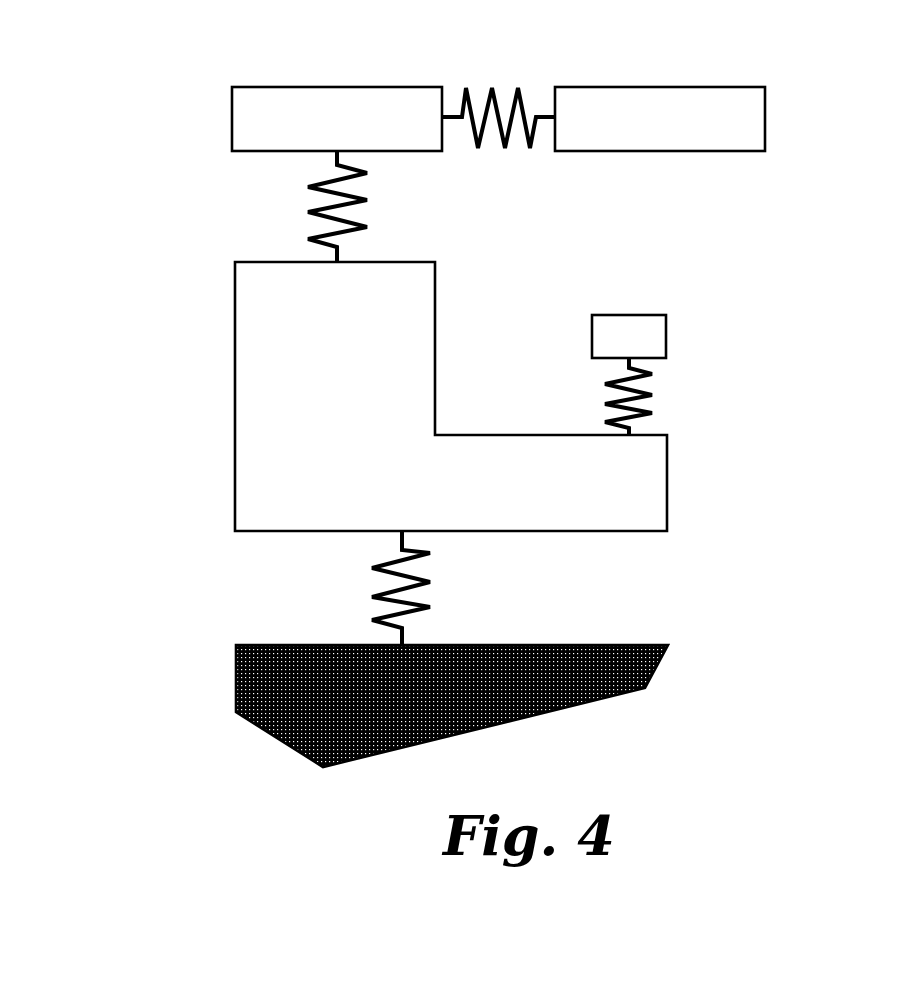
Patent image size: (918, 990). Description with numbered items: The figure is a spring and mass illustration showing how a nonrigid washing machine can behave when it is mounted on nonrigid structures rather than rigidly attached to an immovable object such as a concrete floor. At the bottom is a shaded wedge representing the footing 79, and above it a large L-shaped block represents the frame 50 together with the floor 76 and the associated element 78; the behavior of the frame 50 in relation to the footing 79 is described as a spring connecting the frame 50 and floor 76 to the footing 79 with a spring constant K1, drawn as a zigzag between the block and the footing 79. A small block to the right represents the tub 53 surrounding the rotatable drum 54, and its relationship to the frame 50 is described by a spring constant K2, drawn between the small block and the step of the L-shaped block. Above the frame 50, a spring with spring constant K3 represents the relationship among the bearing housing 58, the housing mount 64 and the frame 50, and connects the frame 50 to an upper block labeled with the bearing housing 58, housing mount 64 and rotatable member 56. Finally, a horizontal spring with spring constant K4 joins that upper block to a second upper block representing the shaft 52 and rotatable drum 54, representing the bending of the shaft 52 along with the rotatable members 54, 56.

The frame 50 is at (361, 396).
The shaft 52 is at (660, 75).
The tub 53 is at (633, 315).
The rotatable drum 54 is at (652, 87).
The rotatable member 56 is at (321, 75).
The bearing housing 58 is at (321, 75).
The housing mount 64 is at (325, 87).
The floor 76 is at (361, 396).
The arm 78 is at (235, 373).
The footing 79 is at (247, 645).
The spring constant K1 is at (430, 582).
The spring constant K2 is at (647, 390).
The spring constant K3 is at (367, 200).
The spring constant K4 is at (490, 88).